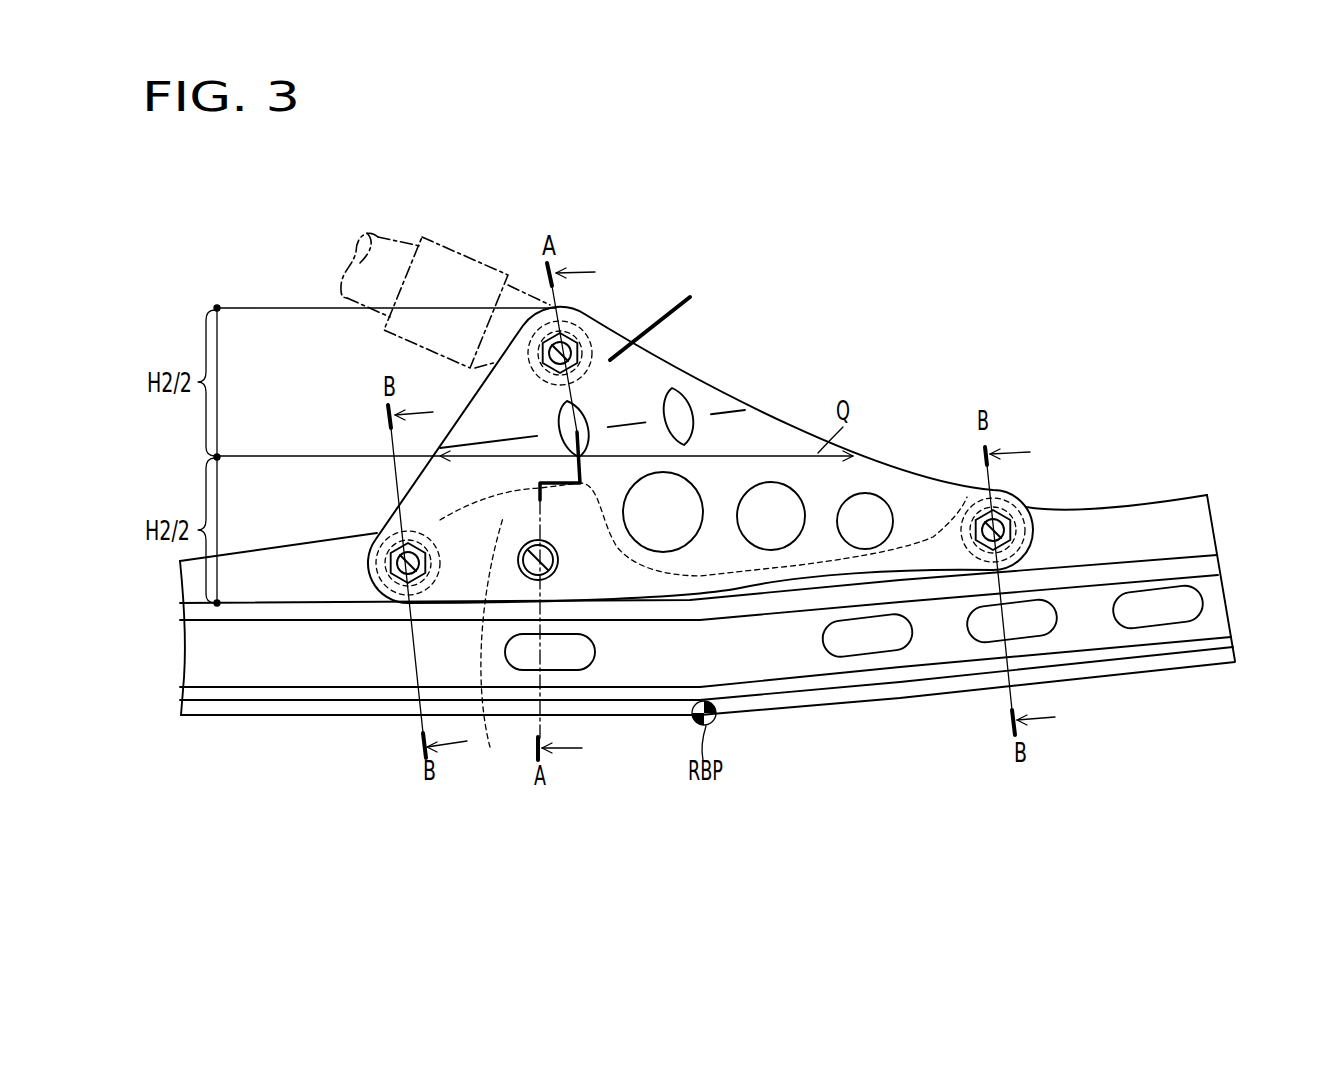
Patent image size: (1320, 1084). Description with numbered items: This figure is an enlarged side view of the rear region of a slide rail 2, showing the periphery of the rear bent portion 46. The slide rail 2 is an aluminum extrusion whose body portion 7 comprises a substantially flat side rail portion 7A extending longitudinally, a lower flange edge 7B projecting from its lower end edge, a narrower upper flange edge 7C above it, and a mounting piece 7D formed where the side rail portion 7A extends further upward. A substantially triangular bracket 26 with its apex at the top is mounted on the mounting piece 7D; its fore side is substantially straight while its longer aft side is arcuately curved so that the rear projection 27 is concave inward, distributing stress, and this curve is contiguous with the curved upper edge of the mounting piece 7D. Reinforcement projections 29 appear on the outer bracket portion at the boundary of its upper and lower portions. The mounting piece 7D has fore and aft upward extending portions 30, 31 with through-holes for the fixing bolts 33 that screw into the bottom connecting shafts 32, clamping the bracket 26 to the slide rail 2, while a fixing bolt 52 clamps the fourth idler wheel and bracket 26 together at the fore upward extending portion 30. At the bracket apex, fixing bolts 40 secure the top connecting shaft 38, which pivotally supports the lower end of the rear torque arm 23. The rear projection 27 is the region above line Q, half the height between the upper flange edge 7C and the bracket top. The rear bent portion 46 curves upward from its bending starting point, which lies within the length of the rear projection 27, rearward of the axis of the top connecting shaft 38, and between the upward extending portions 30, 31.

The slide rail 2 is at (1192, 490).
The body portion 7 is at (1222, 598).
The side rail portion 7A is at (278, 657).
The lower flange edge 7B is at (247, 693).
The upper flange edge 7C is at (193, 610).
The mounting piece 7D is at (1207, 527).
The rear torque arm 23 is at (440, 250).
The bracket 26 is at (770, 407).
The rear projection 27 is at (665, 320).
The reinforcement projection 29 is at (578, 413).
The fore upward extending portion 30 is at (493, 647).
The aft upward extending portion 31 is at (1040, 533).
The bottom connecting shaft 32 is at (385, 575).
The fixing bolt 33 is at (402, 578).
The top connecting shaft 38 is at (573, 320).
The fixing bolt 40 is at (568, 346).
The rear bent portion 46 is at (1175, 662).
The fixing bolt 52 is at (560, 566).